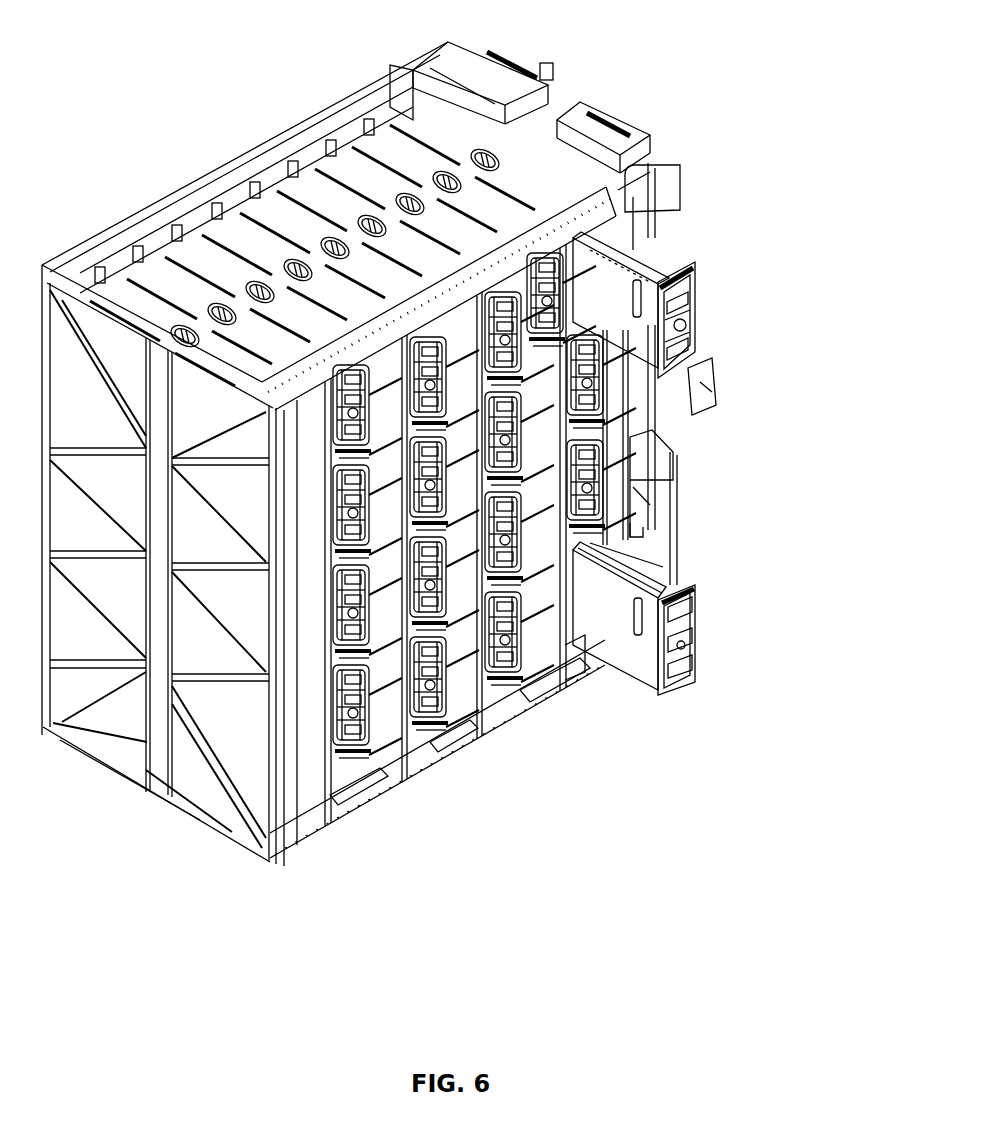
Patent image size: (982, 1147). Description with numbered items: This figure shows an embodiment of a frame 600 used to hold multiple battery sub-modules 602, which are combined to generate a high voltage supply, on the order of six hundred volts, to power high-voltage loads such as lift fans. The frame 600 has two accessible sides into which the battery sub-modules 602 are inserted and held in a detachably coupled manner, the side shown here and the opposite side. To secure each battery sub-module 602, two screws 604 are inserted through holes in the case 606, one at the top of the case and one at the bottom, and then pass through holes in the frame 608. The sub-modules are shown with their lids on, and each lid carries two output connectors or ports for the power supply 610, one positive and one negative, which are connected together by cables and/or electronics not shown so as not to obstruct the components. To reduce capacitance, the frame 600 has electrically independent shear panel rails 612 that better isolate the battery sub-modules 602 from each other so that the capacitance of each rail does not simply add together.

The frame 600 is at (493, 50).
The battery sub-module 602 is at (638, 242).
The screw 604 is at (709, 286).
The case 606 is at (687, 268).
The holes in the frame 608 is at (598, 216).
The output connectors or ports for the power supply 610 is at (695, 311).
The shear panel rails 612 is at (492, 490).